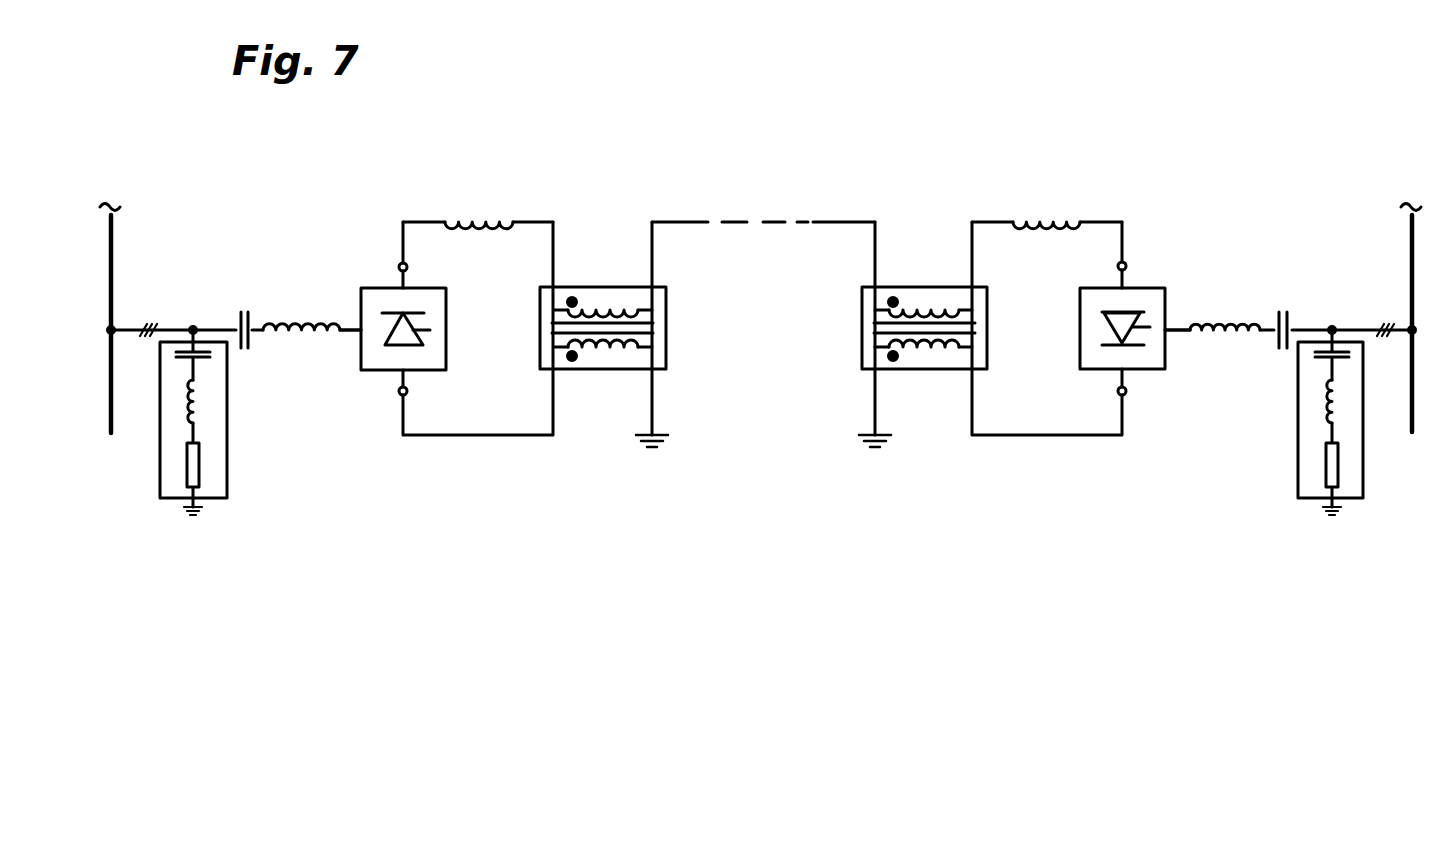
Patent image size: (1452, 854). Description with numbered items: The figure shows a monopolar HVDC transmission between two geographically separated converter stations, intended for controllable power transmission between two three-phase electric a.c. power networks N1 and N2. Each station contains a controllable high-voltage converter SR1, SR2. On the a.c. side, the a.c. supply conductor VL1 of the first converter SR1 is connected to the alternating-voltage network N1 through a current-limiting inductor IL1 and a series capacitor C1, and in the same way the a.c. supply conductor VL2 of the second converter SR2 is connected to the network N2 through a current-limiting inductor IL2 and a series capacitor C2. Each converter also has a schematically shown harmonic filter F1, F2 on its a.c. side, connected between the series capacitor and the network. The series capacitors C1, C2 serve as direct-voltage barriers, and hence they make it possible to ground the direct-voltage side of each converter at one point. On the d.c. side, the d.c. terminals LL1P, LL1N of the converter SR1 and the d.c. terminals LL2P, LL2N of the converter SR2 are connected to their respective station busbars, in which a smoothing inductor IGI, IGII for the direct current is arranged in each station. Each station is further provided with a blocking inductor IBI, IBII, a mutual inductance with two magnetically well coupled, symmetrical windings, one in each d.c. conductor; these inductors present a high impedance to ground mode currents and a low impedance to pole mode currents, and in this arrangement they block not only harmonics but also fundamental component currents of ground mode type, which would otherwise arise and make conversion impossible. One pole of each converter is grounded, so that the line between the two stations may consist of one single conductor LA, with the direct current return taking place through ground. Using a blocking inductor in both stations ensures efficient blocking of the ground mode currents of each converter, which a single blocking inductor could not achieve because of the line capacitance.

The alternating-voltage network N1 is at (111, 395).
The series capacitor C1 is at (243, 310).
The current-limiting inductor IL1 is at (301, 326).
The a.c. supply conductor VL1 is at (340, 340).
The d.c. terminal LL1P is at (399, 264).
The d.c. terminal LL1N is at (398, 398).
The controllable high-voltage converter SR1 is at (428, 370).
The smoothing inductor IGI is at (480, 218).
The blocking inductor IBI is at (604, 286).
The conductor LA is at (750, 220).
The blocking inductor IBII is at (918, 286).
The smoothing inductor IGII is at (1044, 218).
The d.c. terminal LL2N is at (1126, 262).
The a.c. supply conductor VL2 is at (1176, 327).
The controllable high-voltage converter SR2 is at (1097, 370).
The current-limiting inductor IL2 is at (1224, 338).
The d.c. terminal LL2P is at (1126, 394).
The series capacitor C2 is at (1280, 308).
The harmonic filter F1 is at (227, 478).
The harmonic filter F2 is at (1363, 470).
The alternating-voltage network N2 is at (1412, 270).